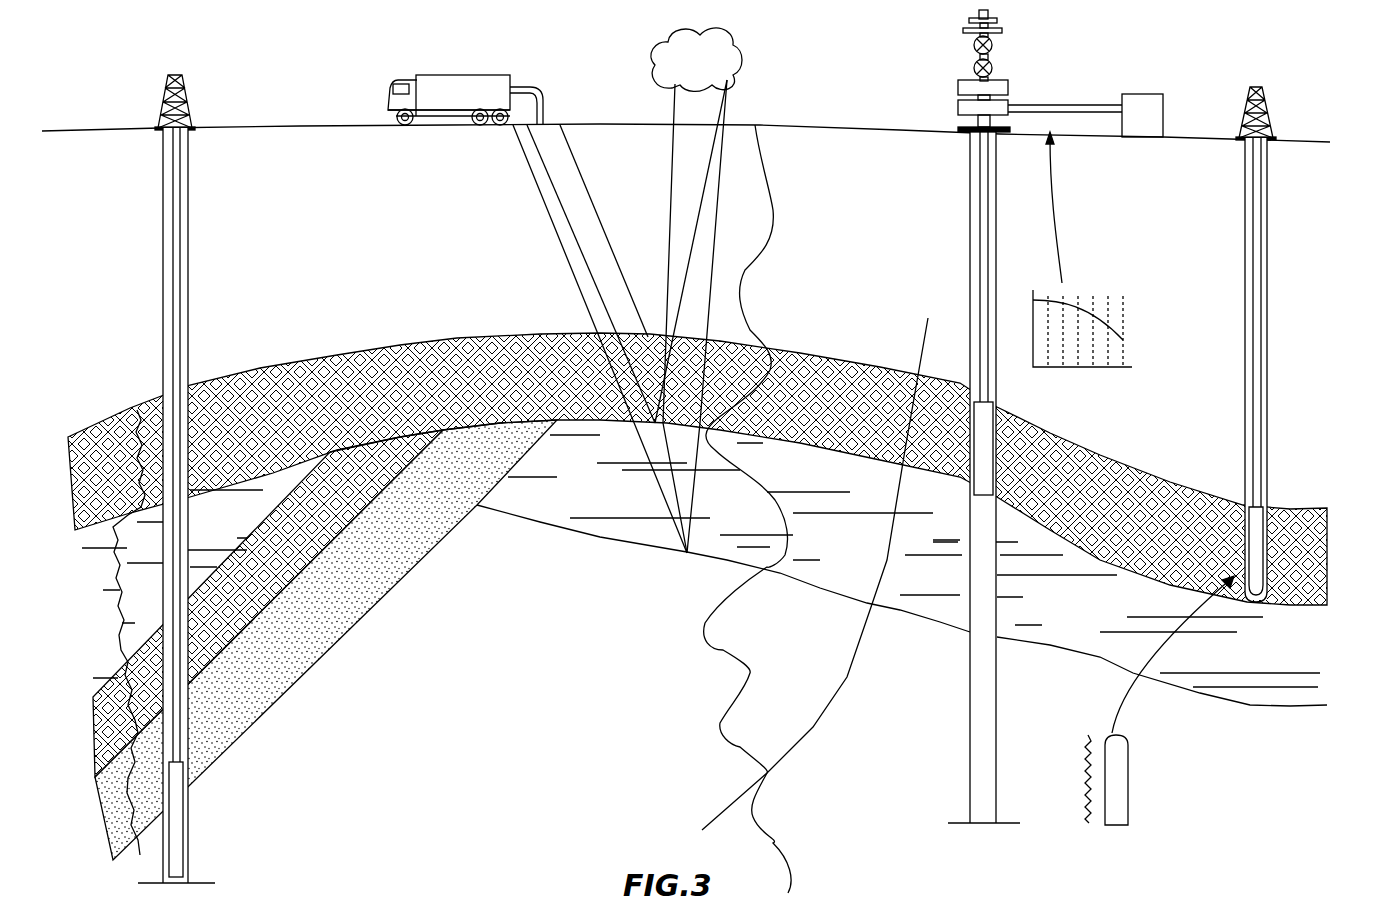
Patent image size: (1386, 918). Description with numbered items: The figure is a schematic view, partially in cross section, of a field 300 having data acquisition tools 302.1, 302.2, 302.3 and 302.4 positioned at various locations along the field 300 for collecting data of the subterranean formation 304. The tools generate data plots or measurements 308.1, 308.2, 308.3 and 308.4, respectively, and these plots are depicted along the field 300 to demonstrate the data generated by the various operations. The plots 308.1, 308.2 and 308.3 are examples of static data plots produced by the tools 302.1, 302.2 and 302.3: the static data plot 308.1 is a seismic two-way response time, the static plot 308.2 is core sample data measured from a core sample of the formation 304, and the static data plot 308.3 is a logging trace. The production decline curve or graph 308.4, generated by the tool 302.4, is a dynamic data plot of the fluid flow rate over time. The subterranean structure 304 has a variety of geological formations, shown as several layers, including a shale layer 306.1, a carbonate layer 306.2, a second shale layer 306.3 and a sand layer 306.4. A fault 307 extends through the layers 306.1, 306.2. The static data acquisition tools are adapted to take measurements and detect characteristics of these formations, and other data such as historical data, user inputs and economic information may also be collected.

The field 300 is at (1190, 82).
The data acquisition tool 302.1 is at (428, 75).
The data acquisition tool 302.2 is at (1263, 537).
The data acquisition tool 302.3 is at (188, 823).
The data acquisition tool 302.4 is at (995, 490).
The subterranean formation 304 is at (545, 642).
The shale layer 306.1 is at (345, 412).
The carbonate layer 306.2 is at (257, 527).
The shale layer 306.3 is at (330, 546).
The sand layer 306.4 is at (372, 604).
The fault 307 is at (928, 325).
The static data plot 308.1 is at (746, 683).
The static data plot 308.2 is at (1122, 700).
The static data plot 308.3 is at (122, 592).
The production decline curve 308.4 is at (1086, 368).